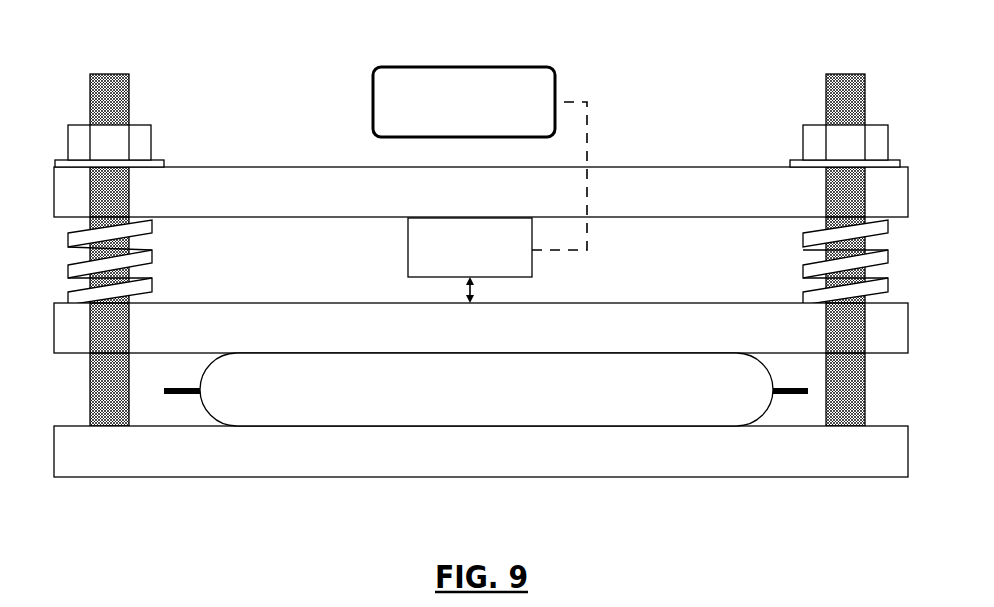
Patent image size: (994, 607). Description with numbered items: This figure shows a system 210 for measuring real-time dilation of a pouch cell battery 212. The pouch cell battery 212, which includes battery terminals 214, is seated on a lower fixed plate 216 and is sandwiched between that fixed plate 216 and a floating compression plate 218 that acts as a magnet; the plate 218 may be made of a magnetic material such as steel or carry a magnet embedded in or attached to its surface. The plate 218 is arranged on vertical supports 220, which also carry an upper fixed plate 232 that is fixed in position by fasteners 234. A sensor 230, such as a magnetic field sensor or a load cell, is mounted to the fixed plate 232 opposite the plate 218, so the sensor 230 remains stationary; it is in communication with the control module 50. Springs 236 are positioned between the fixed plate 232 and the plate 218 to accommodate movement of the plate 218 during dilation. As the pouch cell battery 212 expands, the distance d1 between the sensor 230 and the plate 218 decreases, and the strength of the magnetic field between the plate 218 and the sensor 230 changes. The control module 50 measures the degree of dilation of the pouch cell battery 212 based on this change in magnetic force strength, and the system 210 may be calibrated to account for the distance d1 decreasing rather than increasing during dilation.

The system 210 is at (236, 44).
The pouch cell battery 212 is at (690, 393).
The battery terminals 214 is at (180, 395).
The fixed plate 216 is at (273, 460).
The floating compression plate 218 is at (54, 335).
The supports 220 is at (101, 73).
The sensor 230 is at (408, 240).
The fixed plate 232 is at (197, 190).
The fasteners 234 is at (151, 140).
The springs 236 is at (152, 262).
The control module 50 is at (455, 66).
The distance d1 is at (474, 289).